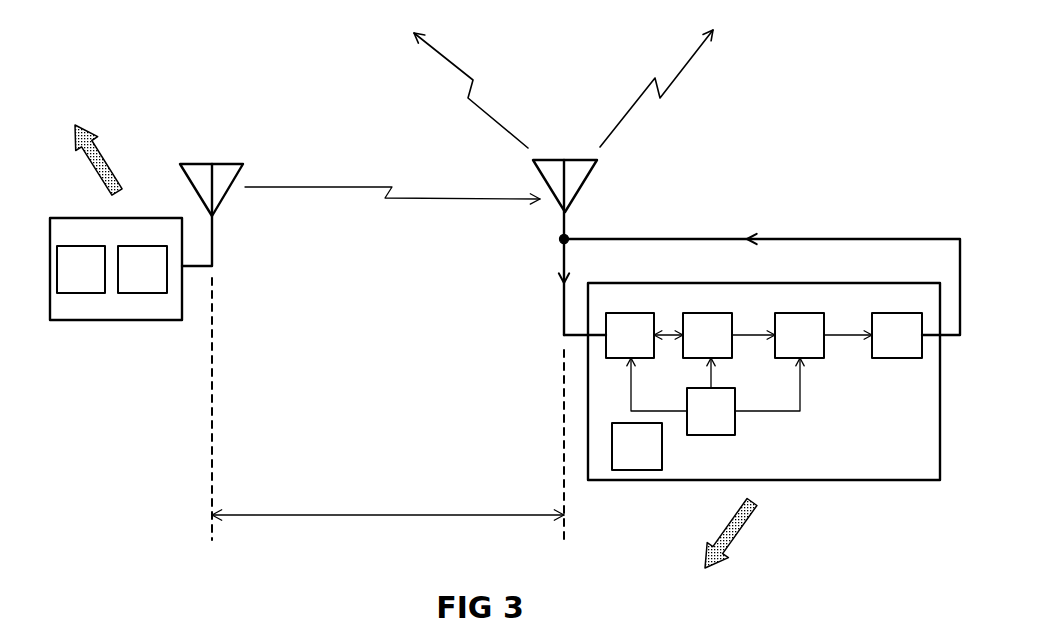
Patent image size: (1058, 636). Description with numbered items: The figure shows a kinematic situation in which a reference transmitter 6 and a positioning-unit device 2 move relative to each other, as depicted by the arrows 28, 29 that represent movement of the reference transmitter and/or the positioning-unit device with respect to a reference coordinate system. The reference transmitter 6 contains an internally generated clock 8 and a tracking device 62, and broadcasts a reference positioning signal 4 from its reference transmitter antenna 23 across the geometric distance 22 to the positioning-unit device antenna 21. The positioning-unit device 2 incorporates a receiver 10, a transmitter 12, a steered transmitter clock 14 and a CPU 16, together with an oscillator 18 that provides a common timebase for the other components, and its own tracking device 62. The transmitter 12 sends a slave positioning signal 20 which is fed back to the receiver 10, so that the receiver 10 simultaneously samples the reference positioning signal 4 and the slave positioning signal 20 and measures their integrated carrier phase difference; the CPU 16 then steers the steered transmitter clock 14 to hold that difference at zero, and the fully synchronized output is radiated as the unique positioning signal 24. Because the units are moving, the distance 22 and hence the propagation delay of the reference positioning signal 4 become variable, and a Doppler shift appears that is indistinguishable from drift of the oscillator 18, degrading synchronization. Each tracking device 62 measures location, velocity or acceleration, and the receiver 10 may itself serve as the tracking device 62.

The positioning-unit device 2 is at (875, 482).
The reference positioning signal 4 is at (395, 202).
The reference transmitter 6 is at (118, 322).
The clock 8 is at (142, 269).
The receiver 10 is at (623, 335).
The transmitter 12 is at (897, 335).
The steered transmitter clock 14 is at (823, 335).
The CPU 16 is at (729, 335).
The oscillator 18 is at (715, 396).
The slave positioning signal 20 is at (848, 237).
The positioning-unit device antenna 21 is at (578, 157).
The geometric distance 22 is at (352, 513).
The reference transmitter antenna 23 is at (232, 162).
The unique positioning signal 24 is at (437, 62).
The arrow 28 is at (90, 127).
The arrow 29 is at (743, 532).
The tracking device 62 is at (359, 358).